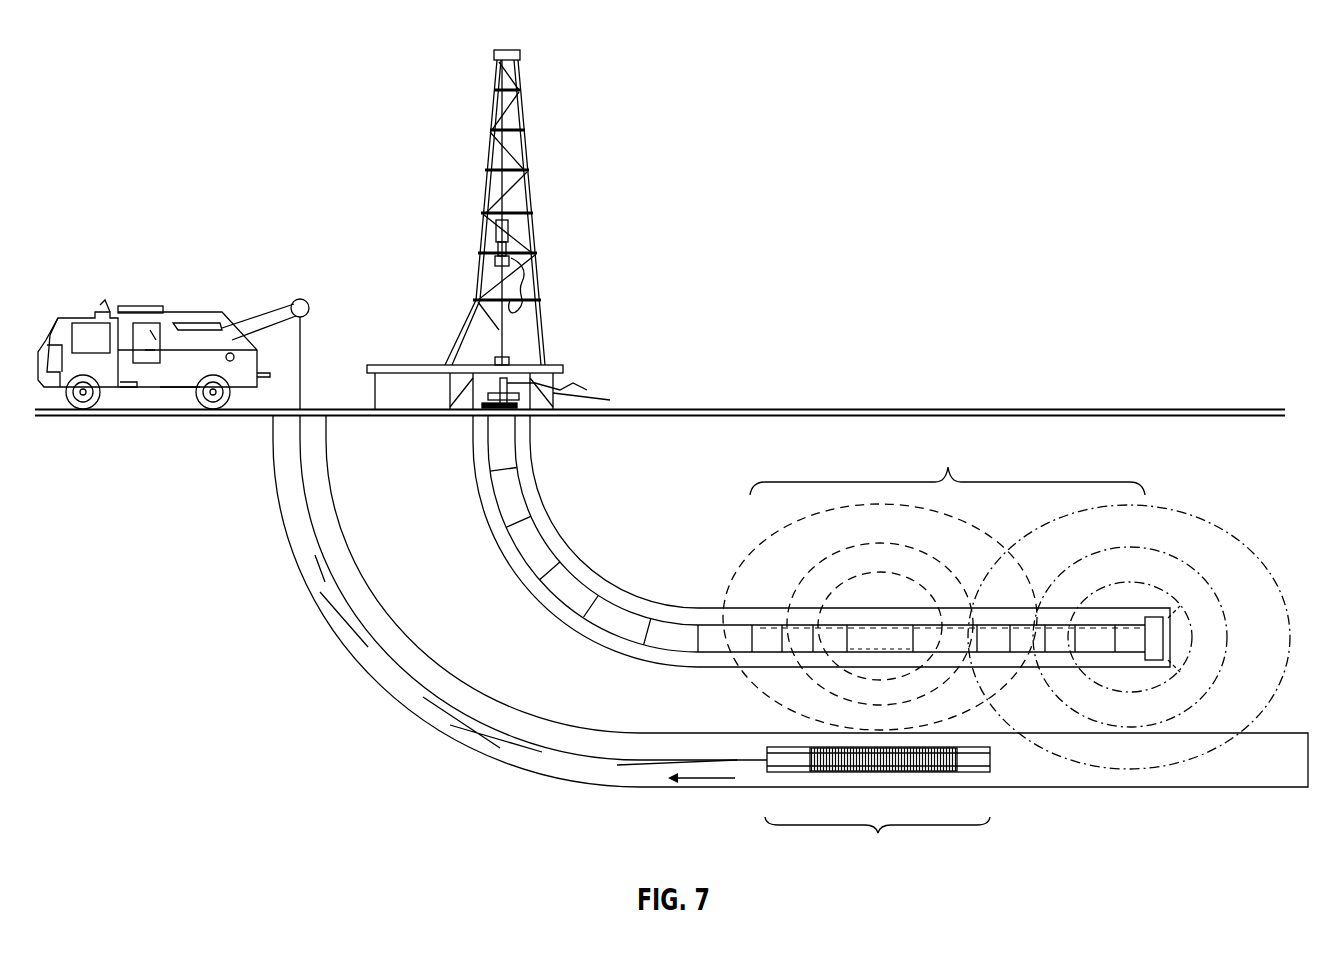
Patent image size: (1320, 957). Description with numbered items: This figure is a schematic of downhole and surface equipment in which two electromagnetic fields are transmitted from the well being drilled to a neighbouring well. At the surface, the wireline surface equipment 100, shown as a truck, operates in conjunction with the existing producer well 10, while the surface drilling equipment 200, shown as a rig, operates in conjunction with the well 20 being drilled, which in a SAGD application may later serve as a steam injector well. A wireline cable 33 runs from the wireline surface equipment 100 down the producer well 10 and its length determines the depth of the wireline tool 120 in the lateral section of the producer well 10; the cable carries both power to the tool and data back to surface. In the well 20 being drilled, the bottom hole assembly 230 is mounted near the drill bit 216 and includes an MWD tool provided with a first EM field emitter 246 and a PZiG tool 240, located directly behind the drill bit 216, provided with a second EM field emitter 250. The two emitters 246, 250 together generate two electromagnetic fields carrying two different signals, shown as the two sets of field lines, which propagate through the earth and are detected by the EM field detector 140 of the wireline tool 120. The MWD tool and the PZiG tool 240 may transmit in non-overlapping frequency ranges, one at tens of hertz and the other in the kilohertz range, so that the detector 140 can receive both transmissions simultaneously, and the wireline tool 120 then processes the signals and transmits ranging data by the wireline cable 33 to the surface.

The producer well 10 is at (276, 492).
The well being drilled 20 is at (558, 512).
The wireline cable 33 is at (392, 663).
The wireline surface equipment 100 is at (148, 303).
The wireline tool 120 is at (877, 807).
The EM field detector 140 is at (876, 772).
The surface drilling equipment 200 is at (532, 192).
The drill bit 216 is at (1165, 642).
The bottom hole assembly (BHA) 230 is at (947, 466).
The PZiG tool 240 is at (1126, 624).
The EM field emitter (of MWD tool) 246 is at (882, 640).
The EM field emitter (of PZiG tool) 250 is at (1133, 645).